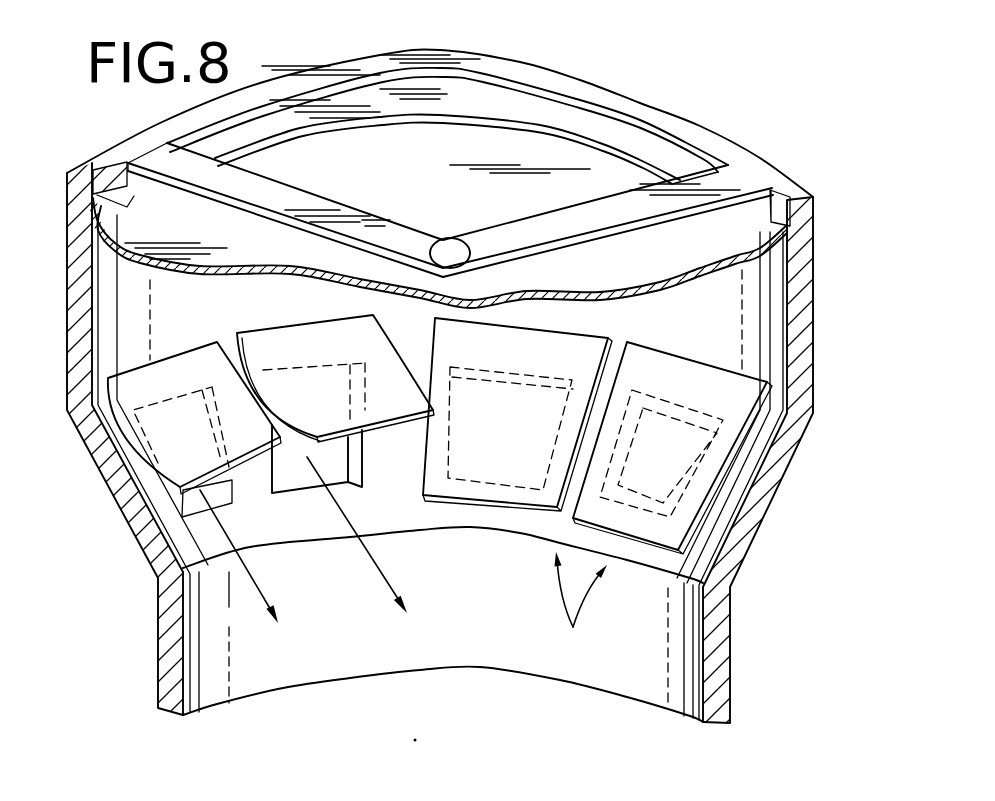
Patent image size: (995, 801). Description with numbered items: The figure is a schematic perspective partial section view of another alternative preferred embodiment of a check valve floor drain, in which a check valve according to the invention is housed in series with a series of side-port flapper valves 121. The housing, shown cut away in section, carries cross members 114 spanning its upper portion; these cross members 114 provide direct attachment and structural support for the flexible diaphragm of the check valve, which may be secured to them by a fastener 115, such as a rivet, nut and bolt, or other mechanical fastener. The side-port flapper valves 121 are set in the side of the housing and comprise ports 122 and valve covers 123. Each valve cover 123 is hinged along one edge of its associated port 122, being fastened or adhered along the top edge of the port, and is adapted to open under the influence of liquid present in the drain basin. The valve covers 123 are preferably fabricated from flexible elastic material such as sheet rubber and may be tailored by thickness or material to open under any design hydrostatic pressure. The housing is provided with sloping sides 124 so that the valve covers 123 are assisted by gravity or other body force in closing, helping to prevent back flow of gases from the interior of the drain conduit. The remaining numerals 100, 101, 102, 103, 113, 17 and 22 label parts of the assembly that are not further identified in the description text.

The pocket assembly 100 is at (660, 80).
The housing wall 101 is at (68, 250).
The frame 102 is at (633, 177).
The sealing strip 103 is at (717, 253).
The side wall 113 is at (753, 460).
The cross members 114 is at (281, 196).
The fastener 115 is at (445, 247).
The side-port flapper valves 121 is at (581, 605).
The ports 122 is at (303, 497).
The valve covers 123 is at (190, 388).
The sloping sides 124 is at (707, 527).
The air flow direction 17 is at (270, 592).
The inner wall 22 is at (200, 490).